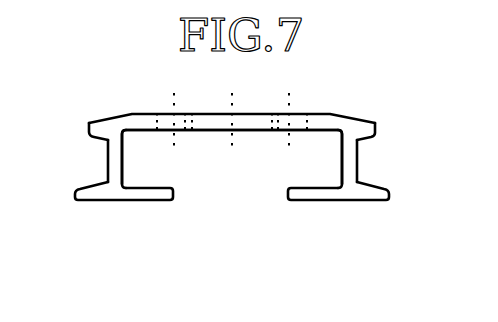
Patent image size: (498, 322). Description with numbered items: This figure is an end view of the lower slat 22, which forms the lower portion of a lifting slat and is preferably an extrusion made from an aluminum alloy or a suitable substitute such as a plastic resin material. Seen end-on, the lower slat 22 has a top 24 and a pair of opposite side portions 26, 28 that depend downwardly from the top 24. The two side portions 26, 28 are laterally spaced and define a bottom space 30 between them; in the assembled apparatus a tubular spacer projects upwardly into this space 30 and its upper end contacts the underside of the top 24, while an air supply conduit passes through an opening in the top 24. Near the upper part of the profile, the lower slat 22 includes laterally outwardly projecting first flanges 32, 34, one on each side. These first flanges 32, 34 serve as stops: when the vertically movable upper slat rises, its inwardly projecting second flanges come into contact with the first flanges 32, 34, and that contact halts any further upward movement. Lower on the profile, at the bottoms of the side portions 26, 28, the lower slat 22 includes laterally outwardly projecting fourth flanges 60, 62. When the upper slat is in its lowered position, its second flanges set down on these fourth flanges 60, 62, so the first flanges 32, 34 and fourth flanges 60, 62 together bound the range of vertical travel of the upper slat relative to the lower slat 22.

The lower slat 22 is at (239, 180).
The top 24 is at (210, 117).
The side portion 26 is at (95, 161).
The side portion 28 is at (366, 160).
The bottom space 30 is at (243, 170).
The first flange 32 is at (93, 126).
The first flange 34 is at (362, 123).
The fourth flange 60 is at (90, 192).
The fourth flange 62 is at (383, 195).